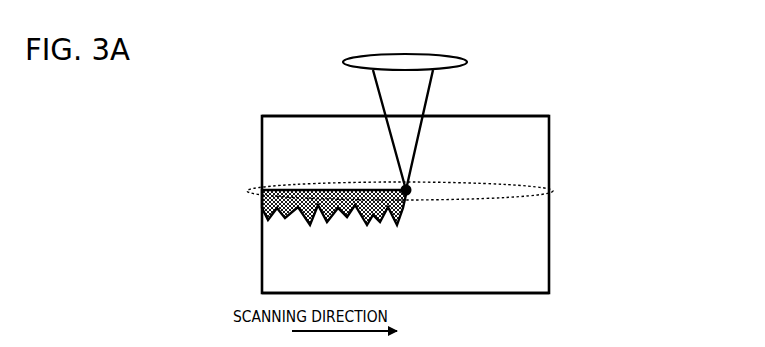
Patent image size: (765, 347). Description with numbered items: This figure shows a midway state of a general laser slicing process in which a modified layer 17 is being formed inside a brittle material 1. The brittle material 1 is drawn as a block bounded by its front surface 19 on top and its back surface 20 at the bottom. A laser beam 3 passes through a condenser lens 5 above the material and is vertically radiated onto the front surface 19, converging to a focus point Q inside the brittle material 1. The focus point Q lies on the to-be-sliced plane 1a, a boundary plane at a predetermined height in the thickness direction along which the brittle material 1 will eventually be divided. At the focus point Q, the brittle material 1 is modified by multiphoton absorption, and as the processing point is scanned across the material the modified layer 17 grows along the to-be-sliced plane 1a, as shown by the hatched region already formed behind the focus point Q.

The brittle material 1 is at (596, 106).
The to-be-sliced plane 1a is at (552, 193).
The laser beam 3 is at (376, 88).
The condenser lens 5 is at (407, 55).
The modified layer 17 is at (328, 200).
The front surface of brittle material 19 is at (500, 116).
The back surface of brittle material 20 is at (470, 293).
The focus point Q is at (411, 188).